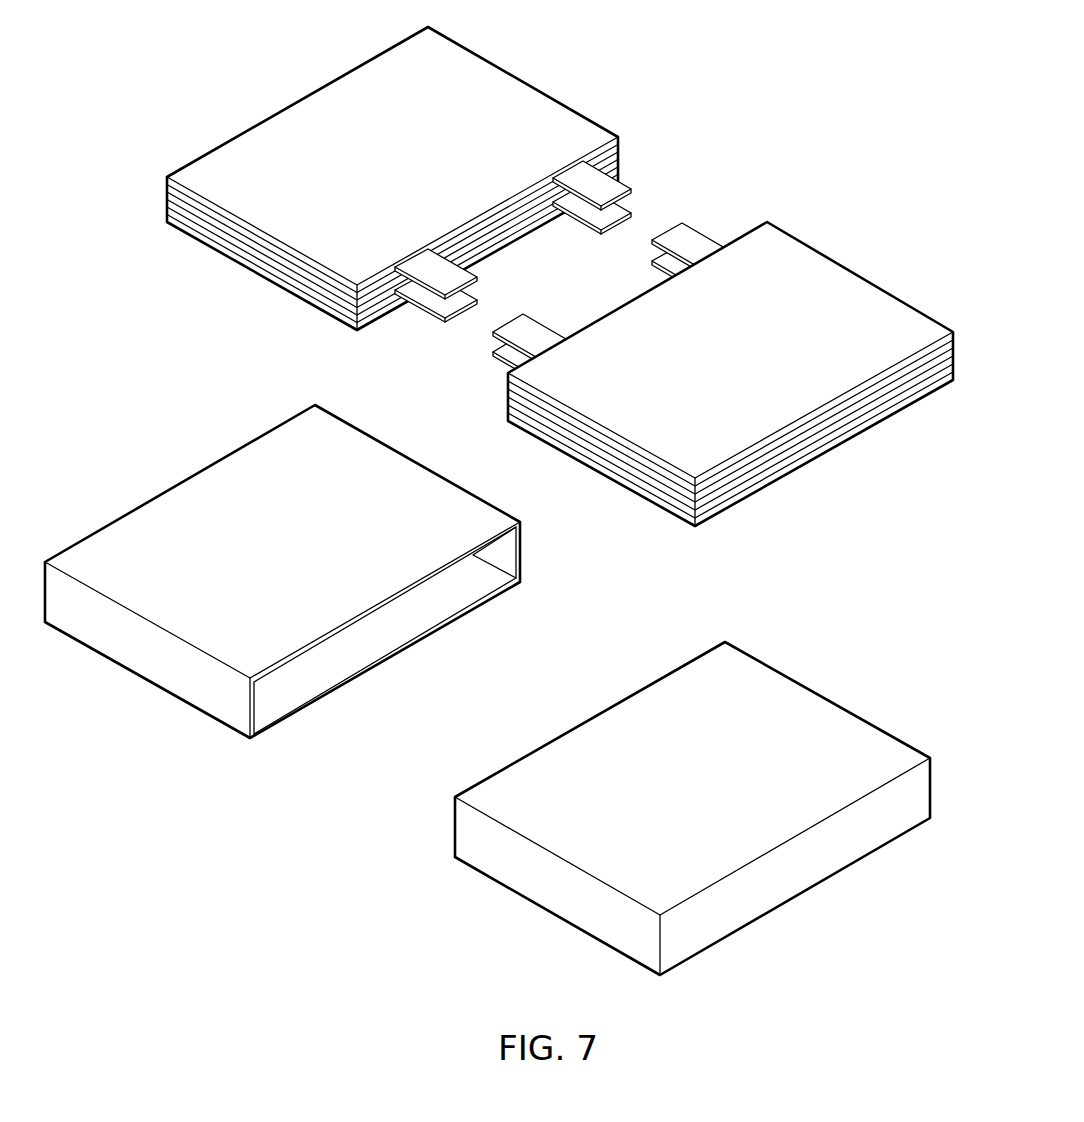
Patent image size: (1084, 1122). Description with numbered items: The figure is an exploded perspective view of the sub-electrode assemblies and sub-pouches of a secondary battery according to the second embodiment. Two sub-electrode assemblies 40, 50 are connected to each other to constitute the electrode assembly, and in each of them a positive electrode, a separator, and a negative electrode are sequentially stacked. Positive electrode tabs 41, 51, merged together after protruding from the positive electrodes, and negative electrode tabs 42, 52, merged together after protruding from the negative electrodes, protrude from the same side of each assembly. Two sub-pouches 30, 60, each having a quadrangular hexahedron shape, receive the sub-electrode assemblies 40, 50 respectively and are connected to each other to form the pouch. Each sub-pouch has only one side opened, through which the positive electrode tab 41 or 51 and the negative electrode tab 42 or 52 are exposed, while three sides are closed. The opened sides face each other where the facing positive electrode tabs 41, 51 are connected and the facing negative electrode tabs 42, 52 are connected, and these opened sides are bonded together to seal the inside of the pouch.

The sub-pouch 30 is at (417, 472).
The sub-electrode assembly 40 is at (505, 85).
The positive electrode tab 41 is at (430, 278).
The negative electrode tab 42 is at (608, 187).
The sub-electrode assembly 50 is at (833, 260).
The positive electrode tab 51 is at (535, 337).
The negative electrode tab 52 is at (690, 240).
The sub-pouch 60 is at (807, 692).